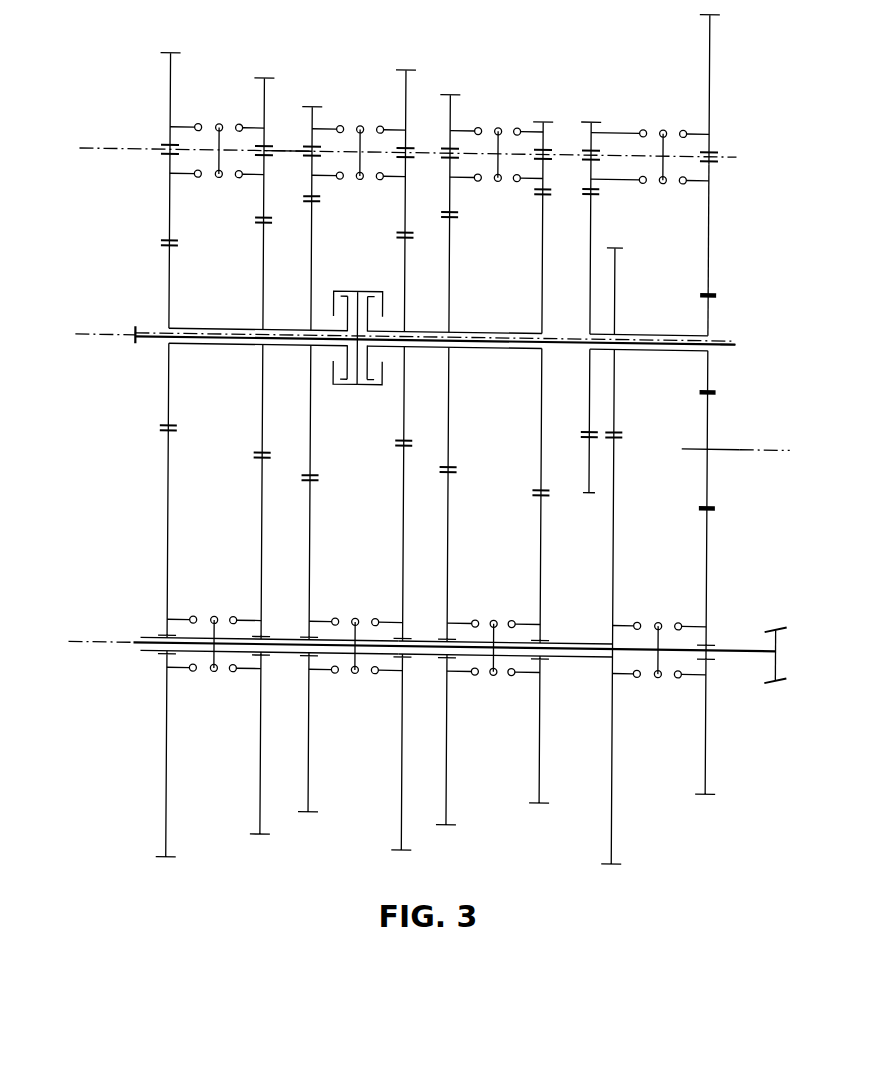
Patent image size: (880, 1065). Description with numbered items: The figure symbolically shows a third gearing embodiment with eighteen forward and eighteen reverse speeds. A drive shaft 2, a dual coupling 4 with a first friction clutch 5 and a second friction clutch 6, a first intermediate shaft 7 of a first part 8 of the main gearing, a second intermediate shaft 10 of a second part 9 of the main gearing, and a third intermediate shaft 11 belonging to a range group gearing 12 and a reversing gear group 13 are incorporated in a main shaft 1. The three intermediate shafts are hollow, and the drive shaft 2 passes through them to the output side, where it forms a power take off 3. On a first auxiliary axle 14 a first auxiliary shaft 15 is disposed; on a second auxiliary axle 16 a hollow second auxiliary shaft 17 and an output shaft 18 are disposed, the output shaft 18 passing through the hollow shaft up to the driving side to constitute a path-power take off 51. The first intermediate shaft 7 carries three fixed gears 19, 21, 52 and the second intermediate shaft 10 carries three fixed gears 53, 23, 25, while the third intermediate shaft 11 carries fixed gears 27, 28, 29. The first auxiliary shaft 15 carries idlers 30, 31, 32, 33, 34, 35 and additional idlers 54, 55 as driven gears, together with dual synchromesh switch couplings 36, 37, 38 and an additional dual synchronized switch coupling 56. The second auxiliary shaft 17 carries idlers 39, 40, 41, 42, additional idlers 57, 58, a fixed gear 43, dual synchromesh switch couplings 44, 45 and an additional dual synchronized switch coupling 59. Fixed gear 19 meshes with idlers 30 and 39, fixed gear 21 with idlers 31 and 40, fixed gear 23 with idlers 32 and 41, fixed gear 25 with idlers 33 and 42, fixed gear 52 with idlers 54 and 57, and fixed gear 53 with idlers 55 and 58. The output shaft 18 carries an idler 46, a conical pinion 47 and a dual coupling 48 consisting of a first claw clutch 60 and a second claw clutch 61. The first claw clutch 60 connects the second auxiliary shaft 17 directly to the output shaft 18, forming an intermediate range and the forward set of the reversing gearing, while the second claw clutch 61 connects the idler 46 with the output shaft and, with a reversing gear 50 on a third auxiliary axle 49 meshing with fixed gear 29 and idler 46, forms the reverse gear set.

The main shaft 1 is at (88, 342).
The drive shaft 2 is at (150, 327).
The power take off 3 is at (718, 342).
The dual coupling 4 is at (356, 287).
The first friction clutch 5 is at (340, 388).
The second friction clutch 6 is at (370, 388).
The first intermediate shaft 7 is at (210, 330).
The first part of main gearing 8 is at (142, 243).
The second part of main gearing 9 is at (162, 487).
The second intermediate shaft 10 is at (496, 331).
The third intermediate shaft 11 is at (655, 331).
The range group gearing 12 is at (716, 233).
The reversing gear group 13 is at (719, 484).
The first auxiliary axle 14 is at (90, 153).
The first auxiliary shaft 15 is at (290, 160).
The second auxiliary axle 16 is at (85, 648).
The second auxiliary shaft 17 is at (570, 640).
The output shaft 18 is at (727, 648).
The fixed gear 19 is at (168, 378).
The fixed gear 21 is at (262, 392).
The fixed gear 23 is at (450, 437).
The fixed gear 25 is at (541, 428).
The fixed gear 27 is at (589, 494).
The fixed gear 28 is at (616, 247).
The fixed gear 29 is at (710, 319).
The idler 30 is at (168, 72).
The idler 31 is at (264, 78).
The idler 32 is at (452, 94).
The idler 33 is at (543, 120).
The idler 34 is at (592, 120).
The idler 35 is at (709, 38).
The dual synchromesh switch coupling 36 is at (218, 108).
The dual synchromesh switch coupling 37 is at (497, 108).
The dual synchromesh switch coupling 38 is at (661, 118).
The idler 39 is at (168, 786).
The idler 40 is at (262, 768).
The idler 41 is at (448, 775).
The idler 42 is at (543, 747).
The fixed gear 43 is at (614, 790).
The dual synchromesh switch coupling 44 is at (216, 602).
The dual synchromesh switch coupling 45 is at (494, 608).
The idler 46 is at (707, 750).
The conical pinion 47 is at (773, 680).
The dual synchromesh switch coupling 48 is at (659, 608).
The third auxiliary axle 49 is at (775, 448).
The reversing gear 50 is at (710, 424).
The path-power take off 51 is at (140, 640).
The fixed gear 52 is at (312, 452).
The fixed gear 53 is at (406, 408).
The idler 54 is at (311, 105).
The idler 55 is at (406, 70).
The dual synchronized switch coupling 56 is at (358, 108).
The idler 57 is at (312, 740).
The idler 58 is at (403, 762).
The dual synchronized switch coupling 59 is at (356, 608).
The first synchronized claw clutch 60 is at (643, 682).
The second synchronized claw clutch 61 is at (664, 690).